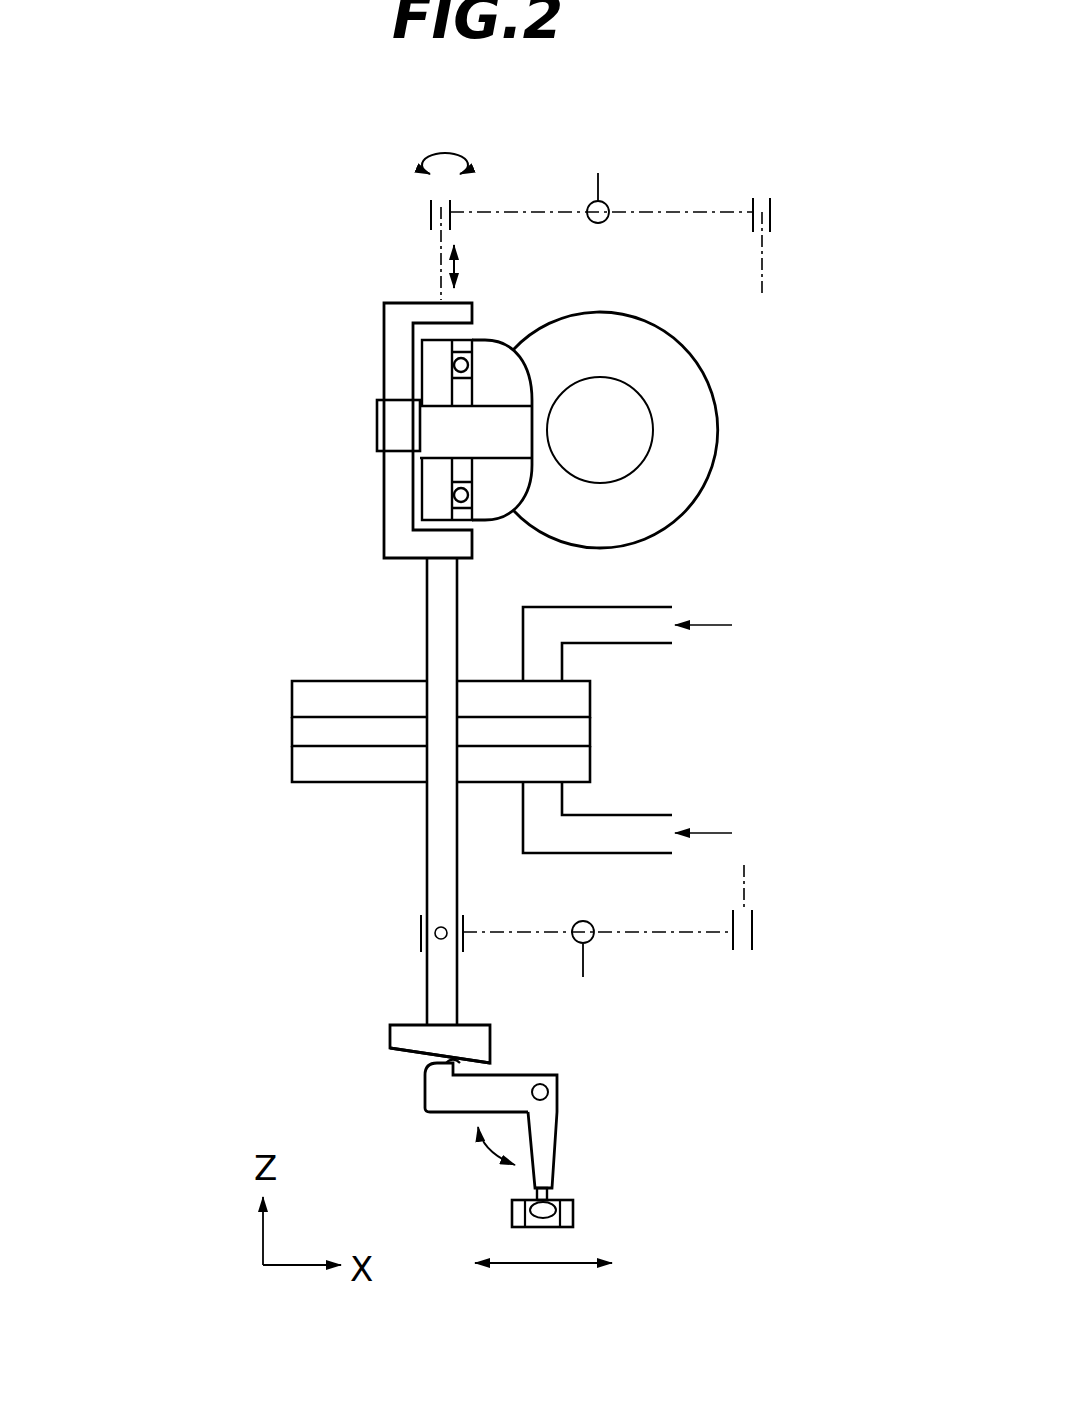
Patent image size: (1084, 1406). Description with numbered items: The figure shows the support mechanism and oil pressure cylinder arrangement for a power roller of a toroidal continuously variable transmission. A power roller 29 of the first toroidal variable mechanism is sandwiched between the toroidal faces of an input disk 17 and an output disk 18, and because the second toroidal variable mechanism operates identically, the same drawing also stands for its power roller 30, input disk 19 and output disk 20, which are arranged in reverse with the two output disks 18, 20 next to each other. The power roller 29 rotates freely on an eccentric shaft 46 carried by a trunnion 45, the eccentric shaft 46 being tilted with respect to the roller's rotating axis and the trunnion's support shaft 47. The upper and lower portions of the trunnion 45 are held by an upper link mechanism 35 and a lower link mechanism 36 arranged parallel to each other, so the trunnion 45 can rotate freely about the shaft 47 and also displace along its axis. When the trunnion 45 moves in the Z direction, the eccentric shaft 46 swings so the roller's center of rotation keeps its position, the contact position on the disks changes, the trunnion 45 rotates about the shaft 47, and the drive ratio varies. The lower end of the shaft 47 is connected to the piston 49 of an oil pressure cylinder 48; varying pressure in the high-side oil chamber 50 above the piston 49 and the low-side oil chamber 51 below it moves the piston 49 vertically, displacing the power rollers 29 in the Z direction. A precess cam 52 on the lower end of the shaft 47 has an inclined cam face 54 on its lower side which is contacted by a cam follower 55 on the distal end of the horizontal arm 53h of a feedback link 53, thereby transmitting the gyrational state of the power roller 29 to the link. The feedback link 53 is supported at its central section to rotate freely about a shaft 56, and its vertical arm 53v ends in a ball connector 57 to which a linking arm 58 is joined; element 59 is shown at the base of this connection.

The upper link mechanism 35 is at (663, 212).
The power roller 29 is at (562, 380).
The power roller 30 is at (520, 372).
The output disk 18 is at (697, 430).
The output disk 20 is at (615, 430).
The input disk 17 is at (615, 430).
The input disk 19 is at (710, 373).
The trunnion 45 is at (372, 525).
The eccentric shaft 46 is at (388, 426).
The shaft 47 is at (427, 615).
The oil pressure cylinder 48 is at (484, 734).
The piston 49 is at (343, 730).
The high-side oil chamber 50 is at (313, 692).
The low-side oil chamber 51 is at (383, 767).
The lower link mechanism 36 is at (675, 937).
The precess cam 52 is at (403, 1025).
The cam face 54 is at (405, 1053).
The cam follower 55 is at (458, 1058).
The feedback link 53 is at (560, 1091).
The horizontal arm 53h is at (512, 1075).
The vertical arm 53v is at (557, 1128).
The shaft 56 is at (548, 1092).
The ball connector 57 is at (550, 1199).
The linking arm 58 is at (582, 1206).
The slider base 59 is at (552, 1227).